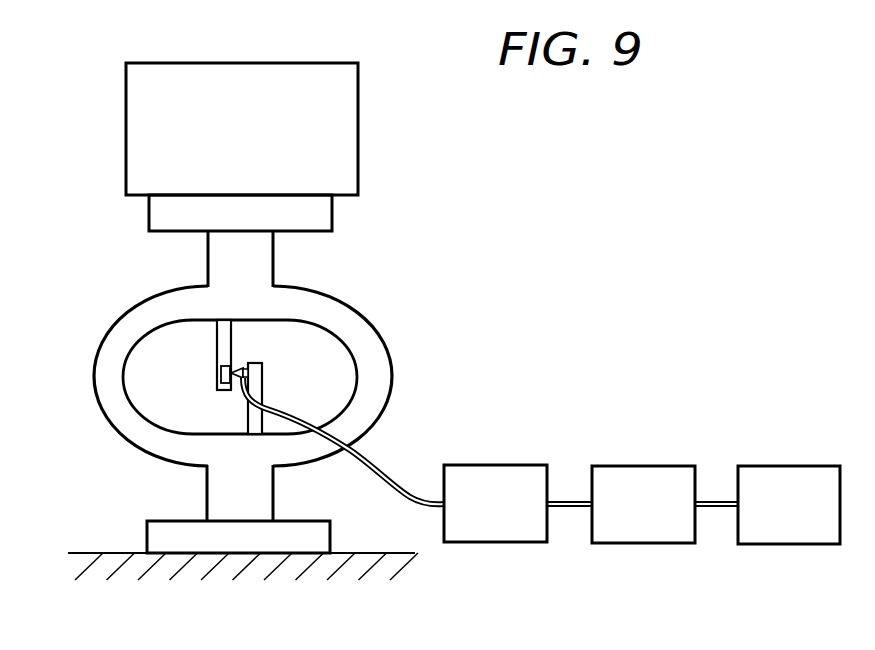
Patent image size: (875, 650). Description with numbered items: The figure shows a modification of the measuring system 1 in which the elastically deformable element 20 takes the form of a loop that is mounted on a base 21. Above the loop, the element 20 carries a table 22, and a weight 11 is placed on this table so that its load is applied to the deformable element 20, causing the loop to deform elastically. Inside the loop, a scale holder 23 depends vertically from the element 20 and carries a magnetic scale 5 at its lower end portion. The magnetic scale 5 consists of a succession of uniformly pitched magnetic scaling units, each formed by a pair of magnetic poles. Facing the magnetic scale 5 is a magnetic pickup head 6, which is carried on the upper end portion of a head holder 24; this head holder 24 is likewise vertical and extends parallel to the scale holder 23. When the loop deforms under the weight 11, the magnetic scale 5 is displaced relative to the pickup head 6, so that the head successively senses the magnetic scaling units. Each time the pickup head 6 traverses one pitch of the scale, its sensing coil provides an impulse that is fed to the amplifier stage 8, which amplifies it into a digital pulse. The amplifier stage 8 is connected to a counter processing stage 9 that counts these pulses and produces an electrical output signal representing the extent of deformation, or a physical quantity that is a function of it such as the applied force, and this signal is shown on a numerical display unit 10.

The measuring system 1 is at (433, 253).
The weight 11 is at (337, 113).
The table 22 is at (318, 212).
The deformable element 20 is at (382, 366).
The scale holder 23 is at (217, 342).
The magnetic scale 5 is at (218, 375).
The magnetic pickup head 6 is at (236, 370).
The head holder 24 is at (258, 394).
The base 21 is at (152, 535).
The amplifier stage 8 is at (520, 475).
The counter processing stage 9 is at (659, 475).
The numerical display unit 10 is at (808, 475).